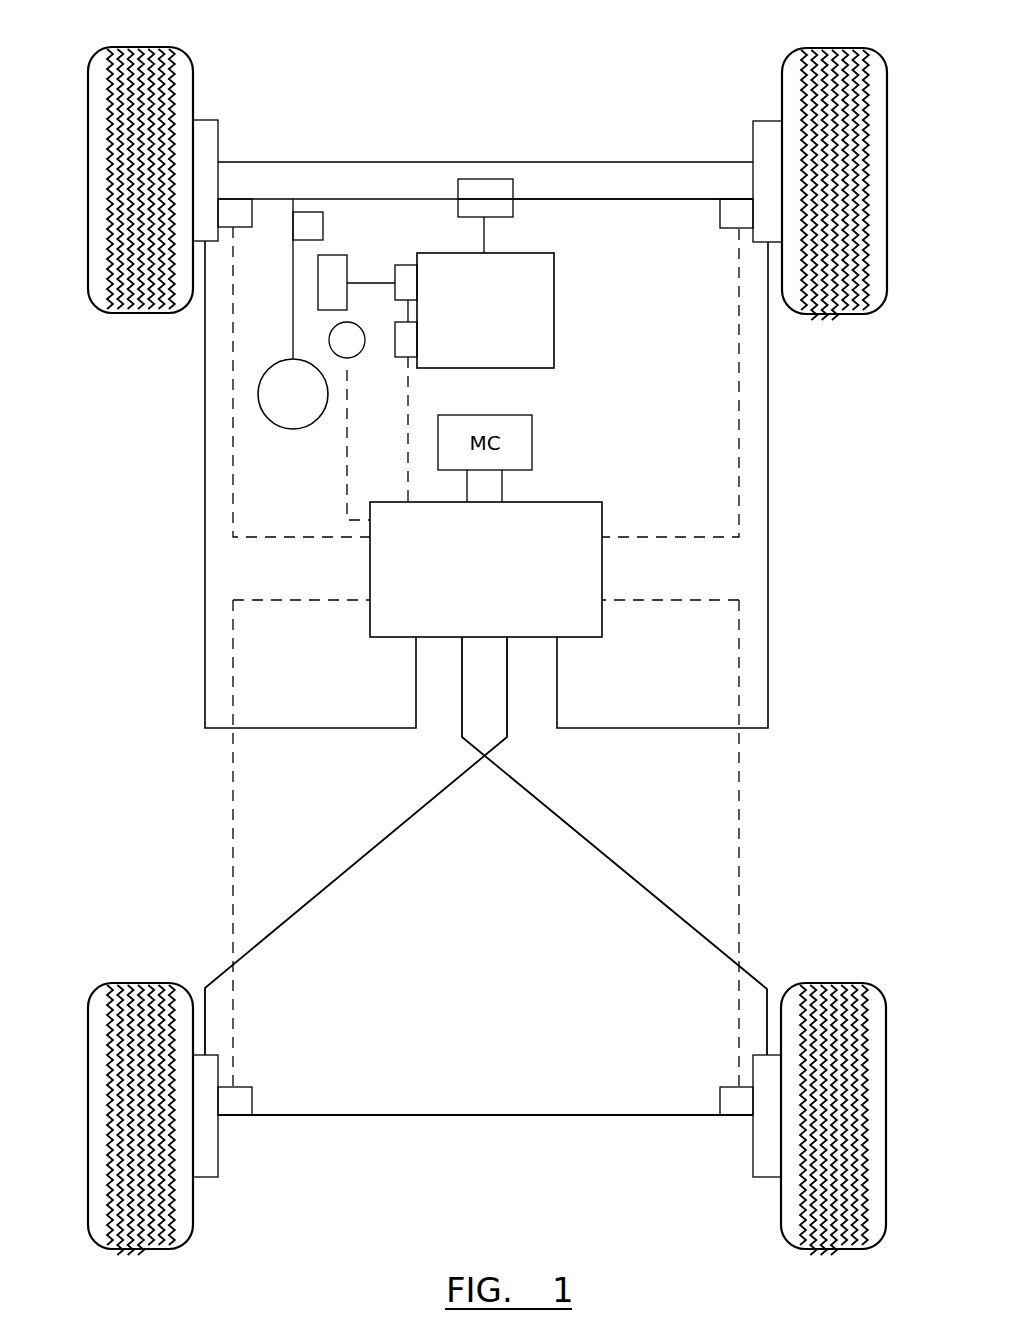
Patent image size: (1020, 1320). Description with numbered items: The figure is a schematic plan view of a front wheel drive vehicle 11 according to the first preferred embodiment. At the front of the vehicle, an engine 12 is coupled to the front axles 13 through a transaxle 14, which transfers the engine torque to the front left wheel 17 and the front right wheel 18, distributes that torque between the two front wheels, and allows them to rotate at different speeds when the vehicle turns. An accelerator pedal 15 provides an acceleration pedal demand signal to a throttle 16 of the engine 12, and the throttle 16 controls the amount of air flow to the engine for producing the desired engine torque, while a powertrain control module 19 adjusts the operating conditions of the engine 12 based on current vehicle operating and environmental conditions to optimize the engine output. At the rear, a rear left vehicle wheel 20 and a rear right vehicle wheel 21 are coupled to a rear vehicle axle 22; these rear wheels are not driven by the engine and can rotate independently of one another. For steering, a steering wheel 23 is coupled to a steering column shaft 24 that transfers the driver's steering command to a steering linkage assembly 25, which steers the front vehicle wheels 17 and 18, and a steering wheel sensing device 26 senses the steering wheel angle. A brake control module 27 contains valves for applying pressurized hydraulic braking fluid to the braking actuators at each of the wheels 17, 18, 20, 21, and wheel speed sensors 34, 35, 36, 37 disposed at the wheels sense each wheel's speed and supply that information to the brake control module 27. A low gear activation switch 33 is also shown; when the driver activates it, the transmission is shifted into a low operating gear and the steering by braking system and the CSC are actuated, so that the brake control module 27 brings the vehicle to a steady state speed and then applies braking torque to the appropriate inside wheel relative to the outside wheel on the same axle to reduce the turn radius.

The front wheel drive vehicle 11 is at (585, 72).
The engine 12 is at (554, 315).
The front axles 13 is at (627, 199).
The transaxle 14 is at (513, 212).
The accelerator pedal 15 is at (348, 268).
The throttle 16 is at (404, 265).
The front left wheel 17 is at (88, 175).
The front right wheel 18 is at (887, 182).
The powertrain control module 19 is at (395, 342).
The rear left vehicle wheel 20 is at (88, 1118).
The rear right vehicle wheel 21 is at (887, 1122).
The rear vehicle axle 22 is at (468, 1118).
The steering wheel 23 is at (290, 429).
The steering column shaft 24 is at (290, 266).
The steering linkage assembly 25 is at (550, 162).
The steering wheel sensing device 26 is at (323, 231).
The brake control module 27 is at (562, 502).
The low gear activation switch 33 is at (347, 358).
The wheel speed sensor 34 is at (234, 204).
The wheel speed sensor 35 is at (737, 204).
The wheel speed sensor 36 is at (233, 1116).
The wheel speed sensor 37 is at (737, 1116).